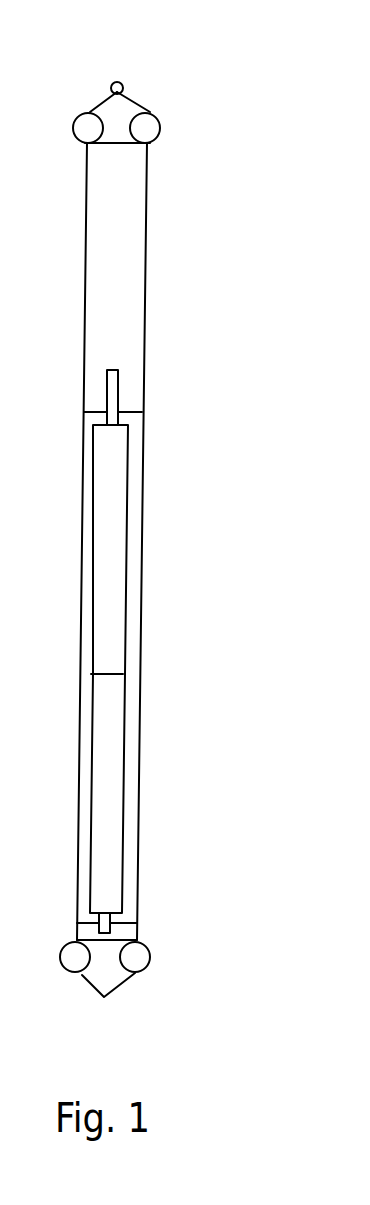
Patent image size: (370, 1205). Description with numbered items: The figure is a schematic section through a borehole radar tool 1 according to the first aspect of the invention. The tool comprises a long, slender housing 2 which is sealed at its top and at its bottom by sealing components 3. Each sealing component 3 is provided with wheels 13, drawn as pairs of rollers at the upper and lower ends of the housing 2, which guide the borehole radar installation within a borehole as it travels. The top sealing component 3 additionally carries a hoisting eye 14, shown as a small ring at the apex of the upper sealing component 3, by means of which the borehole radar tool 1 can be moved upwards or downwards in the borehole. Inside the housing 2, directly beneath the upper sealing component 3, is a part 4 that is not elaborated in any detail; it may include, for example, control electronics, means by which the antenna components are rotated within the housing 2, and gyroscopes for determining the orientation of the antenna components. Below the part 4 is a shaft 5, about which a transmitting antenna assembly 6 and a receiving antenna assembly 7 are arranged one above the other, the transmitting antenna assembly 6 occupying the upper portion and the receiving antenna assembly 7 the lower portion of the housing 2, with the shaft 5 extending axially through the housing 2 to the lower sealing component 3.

The borehole radar tool 1 is at (190, 560).
The housing 2 is at (145, 217).
The sealing component 3 is at (110, 108).
The part 4 is at (127, 263).
The shaft 5 is at (115, 387).
The transmitting antenna assembly 6 is at (125, 502).
The receiving antenna assembly 7 is at (123, 770).
The wheels 13 is at (152, 125).
The hoisting eye 14 is at (128, 87).